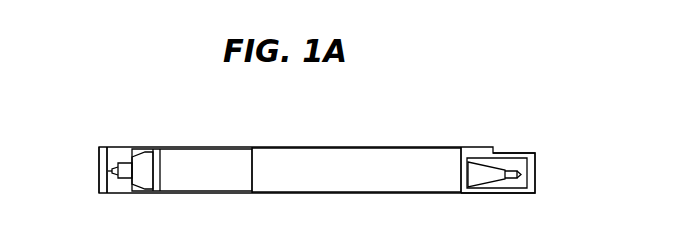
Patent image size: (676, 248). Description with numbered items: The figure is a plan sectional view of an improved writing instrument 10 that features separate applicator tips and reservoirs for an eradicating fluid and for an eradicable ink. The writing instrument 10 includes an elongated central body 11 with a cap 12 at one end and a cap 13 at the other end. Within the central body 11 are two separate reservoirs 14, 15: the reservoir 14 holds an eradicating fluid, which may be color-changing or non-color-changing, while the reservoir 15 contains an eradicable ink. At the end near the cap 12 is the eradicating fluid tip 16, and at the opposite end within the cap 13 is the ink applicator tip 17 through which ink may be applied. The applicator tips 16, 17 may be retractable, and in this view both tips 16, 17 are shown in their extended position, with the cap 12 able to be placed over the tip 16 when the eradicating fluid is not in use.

The writing instrument 10 is at (545, 131).
The central body 11 is at (300, 148).
The cap 12 is at (99, 158).
The cap 13 is at (535, 175).
The reservoir 14 is at (213, 182).
The reservoir 15 is at (399, 182).
The eradicating fluid tip 16 is at (127, 162).
The ink applicator tip 17 is at (501, 153).